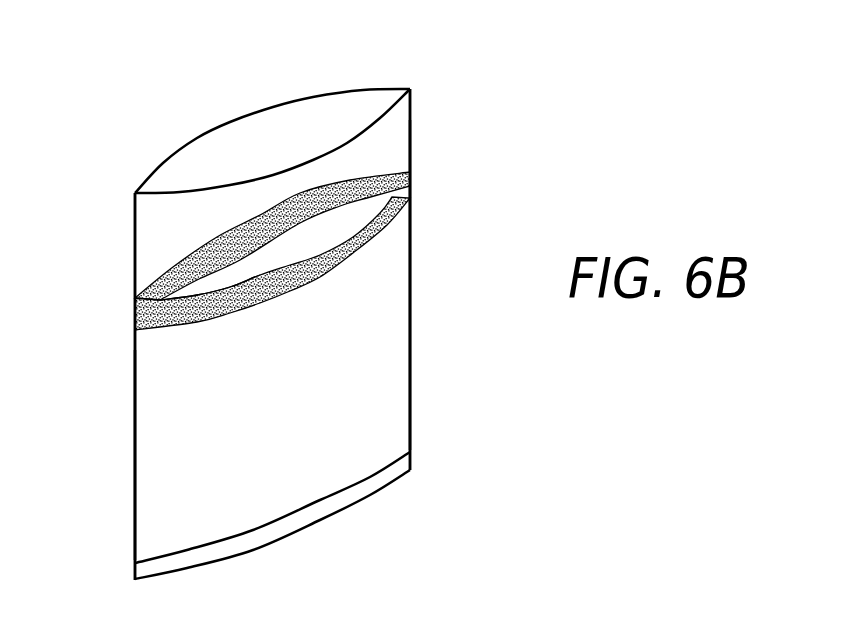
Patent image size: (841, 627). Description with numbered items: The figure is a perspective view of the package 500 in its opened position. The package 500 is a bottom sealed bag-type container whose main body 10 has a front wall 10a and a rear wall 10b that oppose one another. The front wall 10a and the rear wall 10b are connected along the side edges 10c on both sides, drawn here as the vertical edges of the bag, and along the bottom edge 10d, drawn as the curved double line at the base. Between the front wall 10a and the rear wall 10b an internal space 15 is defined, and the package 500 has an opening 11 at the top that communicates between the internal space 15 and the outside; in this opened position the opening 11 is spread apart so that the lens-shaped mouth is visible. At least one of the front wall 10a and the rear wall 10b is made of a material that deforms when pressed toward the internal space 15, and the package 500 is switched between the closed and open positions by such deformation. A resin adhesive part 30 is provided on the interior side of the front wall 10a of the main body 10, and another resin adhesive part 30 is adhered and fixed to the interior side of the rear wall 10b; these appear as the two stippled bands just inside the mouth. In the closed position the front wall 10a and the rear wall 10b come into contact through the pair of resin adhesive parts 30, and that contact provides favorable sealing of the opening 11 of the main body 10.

The package 500 is at (466, 112).
The main body 10 is at (385, 277).
The front wall 10a is at (370, 363).
The rear wall 10b is at (177, 405).
The side edges 10c is at (411, 412).
The bottom edge 10d is at (293, 533).
The opening 11 is at (271, 244).
The internal space 15 is at (255, 336).
The resin adhesive part 30 is at (330, 190).